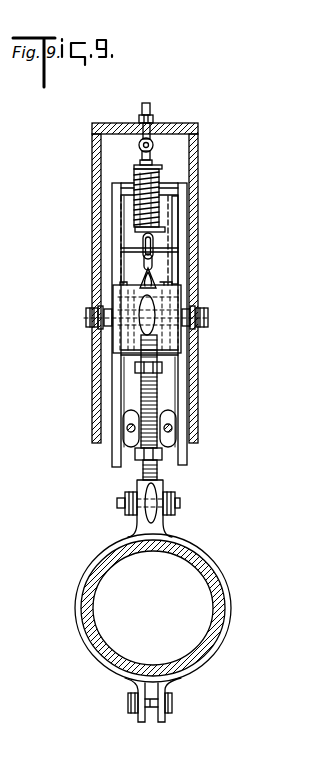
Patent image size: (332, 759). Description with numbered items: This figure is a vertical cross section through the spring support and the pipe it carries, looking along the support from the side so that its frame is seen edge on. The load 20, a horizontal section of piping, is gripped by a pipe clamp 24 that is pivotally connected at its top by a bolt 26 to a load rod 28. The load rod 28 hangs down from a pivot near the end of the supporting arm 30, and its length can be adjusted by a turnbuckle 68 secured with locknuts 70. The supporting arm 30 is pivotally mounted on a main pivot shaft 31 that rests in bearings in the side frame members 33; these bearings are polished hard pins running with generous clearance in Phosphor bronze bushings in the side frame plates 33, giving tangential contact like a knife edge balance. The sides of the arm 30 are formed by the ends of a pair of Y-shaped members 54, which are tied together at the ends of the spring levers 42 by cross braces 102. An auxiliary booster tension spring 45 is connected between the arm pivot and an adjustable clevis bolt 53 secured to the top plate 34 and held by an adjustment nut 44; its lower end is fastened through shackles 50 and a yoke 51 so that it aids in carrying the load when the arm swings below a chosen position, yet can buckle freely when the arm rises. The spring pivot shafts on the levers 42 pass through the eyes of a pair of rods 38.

The load 20 is at (175, 628).
The pipe clamp 24 is at (198, 551).
The bolt 26 is at (181, 503).
The load rod 28 is at (150, 479).
The supporting arm 30 is at (185, 297).
The main pivot shaft 31 is at (86, 318).
The side frame members 33 is at (98, 348).
The top plate 34 is at (118, 105).
The rods 38 is at (127, 430).
The spring levers 42 is at (109, 212).
The adjustment nut 44 is at (151, 116).
The auxiliary booster tension spring 45 is at (160, 183).
The shackles 50 is at (152, 268).
The yoke 51 is at (158, 282).
The adjustable clevis bolt 53 is at (148, 128).
The Y-shaped members 54 is at (120, 262).
The turnbuckle 68 is at (141, 397).
The locknuts 70 is at (137, 366).
The cross braces 102 is at (168, 242).